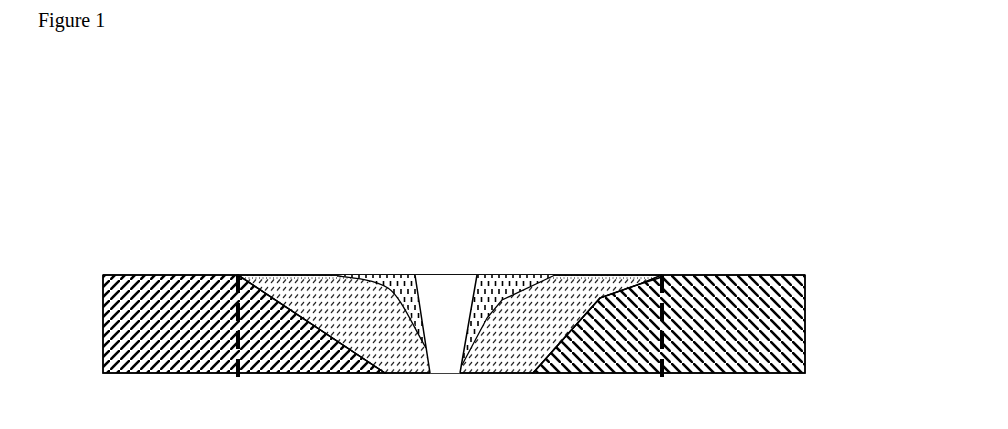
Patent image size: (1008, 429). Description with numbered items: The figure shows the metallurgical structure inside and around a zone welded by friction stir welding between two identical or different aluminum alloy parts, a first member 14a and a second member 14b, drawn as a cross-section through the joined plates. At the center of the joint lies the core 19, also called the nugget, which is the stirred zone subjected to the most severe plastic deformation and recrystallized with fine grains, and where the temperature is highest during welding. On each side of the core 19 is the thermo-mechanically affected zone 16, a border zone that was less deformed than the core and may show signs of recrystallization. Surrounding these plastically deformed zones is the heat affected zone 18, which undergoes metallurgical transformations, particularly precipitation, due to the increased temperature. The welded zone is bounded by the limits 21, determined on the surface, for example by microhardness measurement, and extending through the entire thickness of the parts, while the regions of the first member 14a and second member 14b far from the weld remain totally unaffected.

The first member 14a is at (140, 337).
The second member 14b is at (730, 335).
The thermo-mechanically affected zone 16 is at (505, 282).
The heat affected zone 18 is at (295, 287).
The core 19 is at (452, 295).
The limits of the welded zone 21 is at (240, 275).